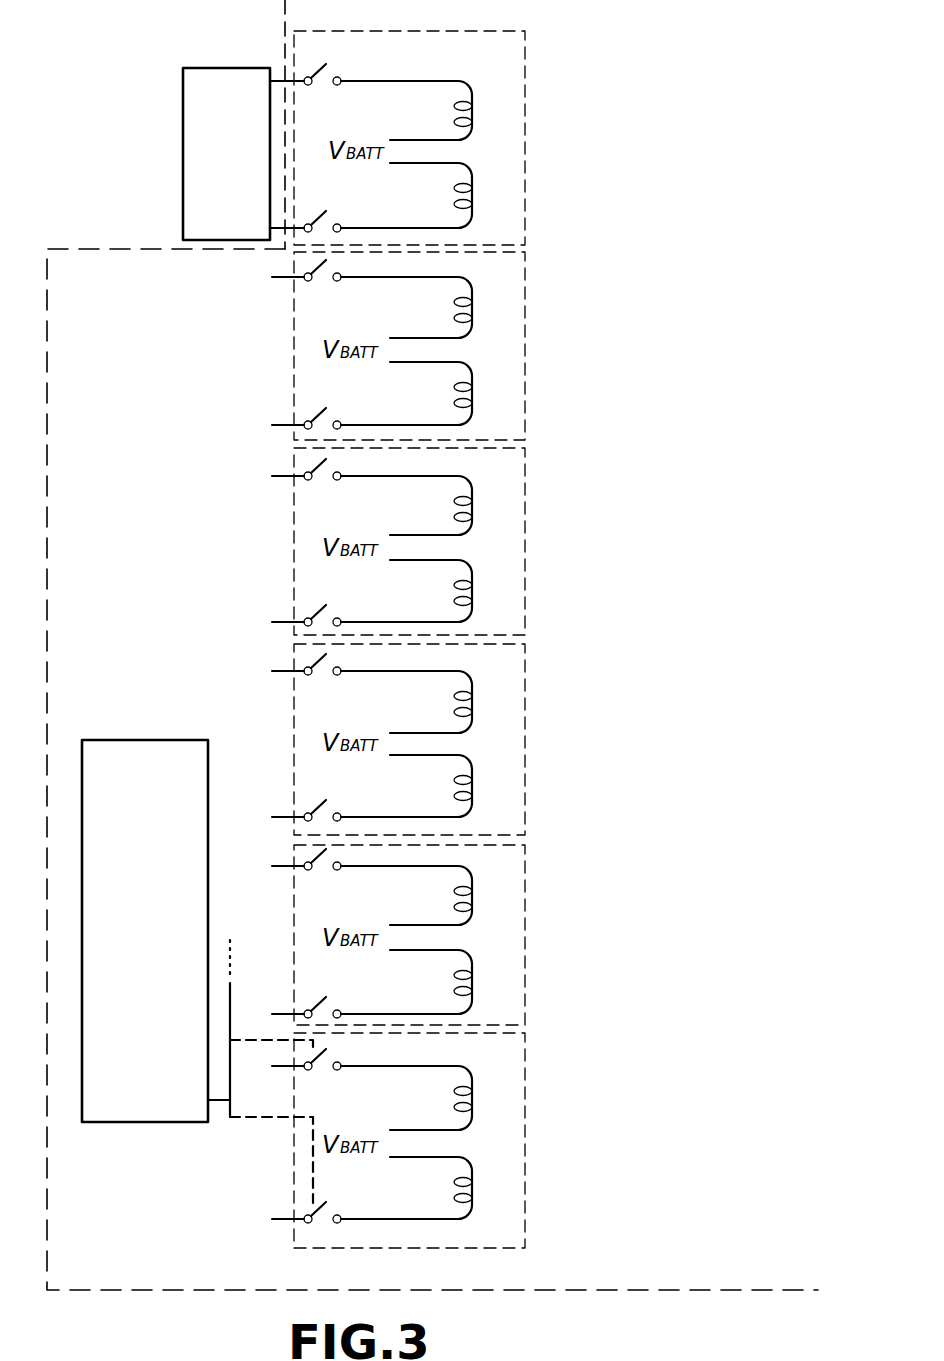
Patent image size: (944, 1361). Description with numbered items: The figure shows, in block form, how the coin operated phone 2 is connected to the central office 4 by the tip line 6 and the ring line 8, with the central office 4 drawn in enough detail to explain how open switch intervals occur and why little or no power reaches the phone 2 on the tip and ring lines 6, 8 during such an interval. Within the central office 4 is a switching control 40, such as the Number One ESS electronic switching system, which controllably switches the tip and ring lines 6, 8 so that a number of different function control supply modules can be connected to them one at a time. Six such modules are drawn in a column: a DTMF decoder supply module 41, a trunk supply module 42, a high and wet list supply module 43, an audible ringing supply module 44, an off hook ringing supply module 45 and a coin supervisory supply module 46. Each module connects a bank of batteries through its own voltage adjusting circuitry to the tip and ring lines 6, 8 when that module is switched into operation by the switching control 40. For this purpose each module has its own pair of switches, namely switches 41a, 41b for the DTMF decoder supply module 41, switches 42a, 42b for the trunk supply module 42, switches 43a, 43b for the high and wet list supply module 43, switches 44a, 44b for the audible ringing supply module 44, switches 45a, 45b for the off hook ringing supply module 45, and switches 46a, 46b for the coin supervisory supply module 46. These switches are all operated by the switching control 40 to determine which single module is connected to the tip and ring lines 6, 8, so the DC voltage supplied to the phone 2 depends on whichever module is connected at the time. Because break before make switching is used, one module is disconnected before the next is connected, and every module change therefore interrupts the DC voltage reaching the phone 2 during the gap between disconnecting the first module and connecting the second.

The phone 2 is at (187, 68).
The central office 4 is at (285, 6).
The tip line 6 is at (404, 80).
The ring line 8 is at (422, 227).
The switching control 40 is at (135, 1122).
The DTMF decoder supply module 41 is at (527, 90).
The switch 41a is at (322, 85).
The switch 41b is at (322, 224).
The trunk supply module 42 is at (527, 290).
The switch 42a is at (322, 281).
The switch 42b is at (322, 421).
The high and wet list supply module 43 is at (527, 490).
The switch 43a is at (322, 480).
The switch 43b is at (322, 618).
The audible ringing supply module 44 is at (527, 680).
The switch 44a is at (322, 675).
The switch 44b is at (322, 813).
The off hook ringing supply module 45 is at (527, 870).
The switch 45a is at (322, 870).
The switch 45b is at (322, 1010).
The coin supervisory supply module 46 is at (527, 1068).
The switch 46a is at (322, 1070).
The switch 46b is at (322, 1215).